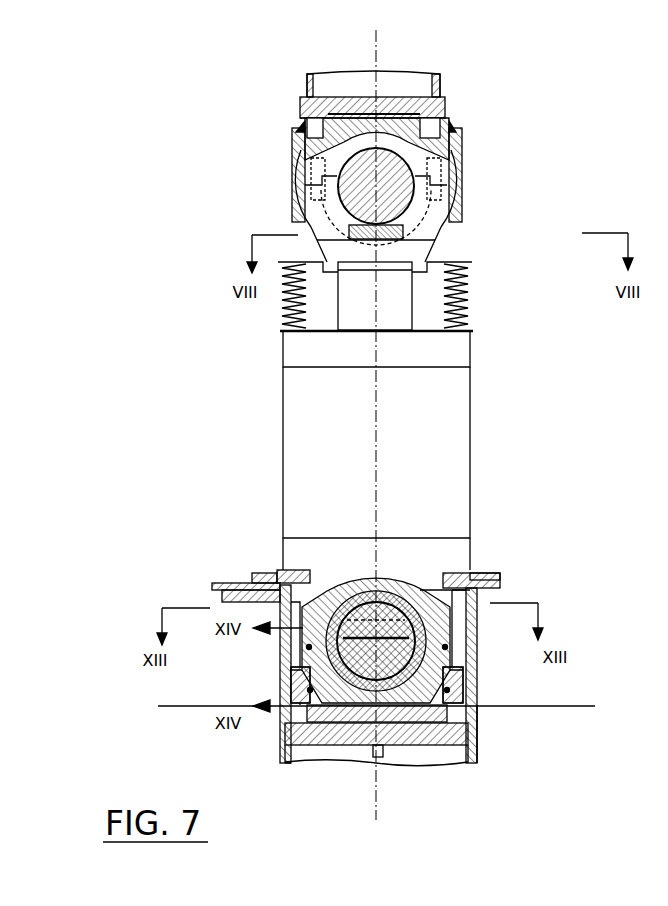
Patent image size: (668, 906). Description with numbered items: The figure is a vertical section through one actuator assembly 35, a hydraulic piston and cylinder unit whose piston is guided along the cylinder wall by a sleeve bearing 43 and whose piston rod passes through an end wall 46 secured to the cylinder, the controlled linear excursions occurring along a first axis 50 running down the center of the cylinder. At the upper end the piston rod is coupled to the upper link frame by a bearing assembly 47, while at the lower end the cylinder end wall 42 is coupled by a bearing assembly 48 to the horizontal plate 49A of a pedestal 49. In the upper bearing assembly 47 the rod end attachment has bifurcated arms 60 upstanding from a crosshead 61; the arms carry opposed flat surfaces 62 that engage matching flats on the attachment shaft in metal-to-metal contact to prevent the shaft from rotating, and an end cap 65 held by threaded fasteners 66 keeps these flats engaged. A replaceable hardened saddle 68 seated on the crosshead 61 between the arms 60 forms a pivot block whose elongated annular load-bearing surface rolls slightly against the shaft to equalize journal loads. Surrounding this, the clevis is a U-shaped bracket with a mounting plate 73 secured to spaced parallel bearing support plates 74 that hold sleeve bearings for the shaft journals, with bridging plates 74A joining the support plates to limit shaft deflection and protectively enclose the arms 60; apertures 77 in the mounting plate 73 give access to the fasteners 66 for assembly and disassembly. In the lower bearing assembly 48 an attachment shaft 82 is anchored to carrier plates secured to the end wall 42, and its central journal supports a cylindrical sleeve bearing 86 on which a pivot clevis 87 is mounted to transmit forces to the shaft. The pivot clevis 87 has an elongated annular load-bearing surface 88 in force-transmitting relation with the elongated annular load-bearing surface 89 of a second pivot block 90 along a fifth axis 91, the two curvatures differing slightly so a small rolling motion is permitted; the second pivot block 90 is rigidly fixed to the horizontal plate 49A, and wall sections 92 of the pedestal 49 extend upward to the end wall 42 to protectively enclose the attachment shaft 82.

The actuator assembly 35 is at (455, 455).
The cylinder end wall 42 is at (455, 552).
The sleeve bearing 43 is at (402, 84).
The end wall 46 is at (455, 355).
The bearing assembly 47 is at (465, 130).
The bearing assembly 48 is at (478, 688).
The pedestal 49 is at (455, 741).
The horizontal plate 49A is at (448, 727).
The first axis 50 is at (378, 482).
The bifurcated arms 60 is at (453, 218).
The crosshead 61 is at (403, 252).
The opposed flat surfaces 62 is at (440, 188).
The end cap 65 is at (333, 97).
The threaded fasteners 66 is at (313, 185).
The replaceable hardened saddle 68 is at (306, 227).
The mounting plate 73 is at (450, 118).
The bearing support plates 74 is at (310, 153).
The bridging plates 74A is at (292, 201).
The apertures 77 is at (295, 130).
The attachment shaft 82 is at (395, 631).
The cylindrical sleeve bearing 86 is at (340, 598).
The pivot clevis 87 is at (364, 584).
The elongated annular load-bearing surface 88 is at (400, 722).
The elongated annular load-bearing surface 89 is at (348, 690).
The second pivot block 90 is at (364, 720).
The fifth axis 91 is at (512, 707).
The wall sections 92 is at (283, 650).